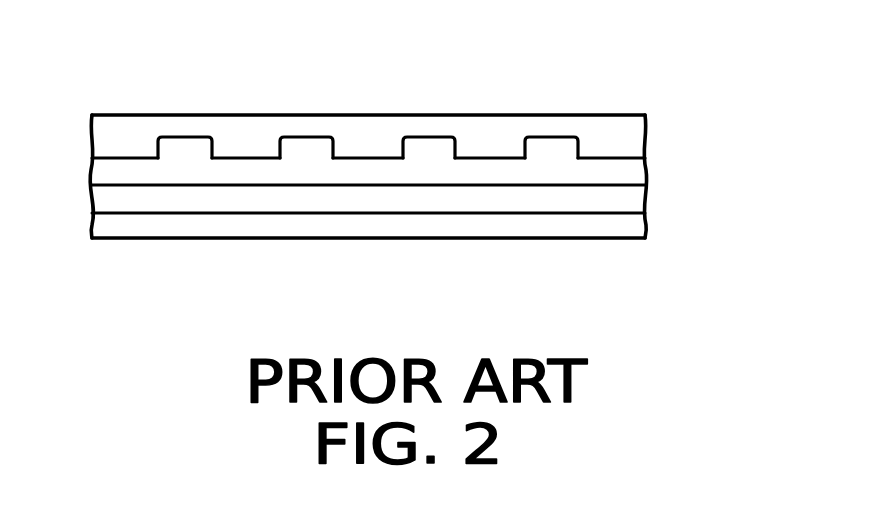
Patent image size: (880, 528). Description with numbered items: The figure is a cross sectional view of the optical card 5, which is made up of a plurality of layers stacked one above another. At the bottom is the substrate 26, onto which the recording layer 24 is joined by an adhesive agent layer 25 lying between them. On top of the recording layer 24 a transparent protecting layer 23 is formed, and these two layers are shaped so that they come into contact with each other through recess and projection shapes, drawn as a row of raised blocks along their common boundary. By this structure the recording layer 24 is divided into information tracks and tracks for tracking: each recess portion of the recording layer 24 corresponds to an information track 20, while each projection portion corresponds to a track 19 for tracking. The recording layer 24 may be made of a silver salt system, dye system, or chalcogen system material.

The optical card 5 is at (77, 107).
The track for tracking 19 is at (190, 127).
The information track 20 is at (248, 168).
The transparent protecting layer 23 is at (632, 133).
The recording layer 24 is at (635, 172).
The adhesive agent layer 25 is at (638, 200).
The substrate 26 is at (637, 227).